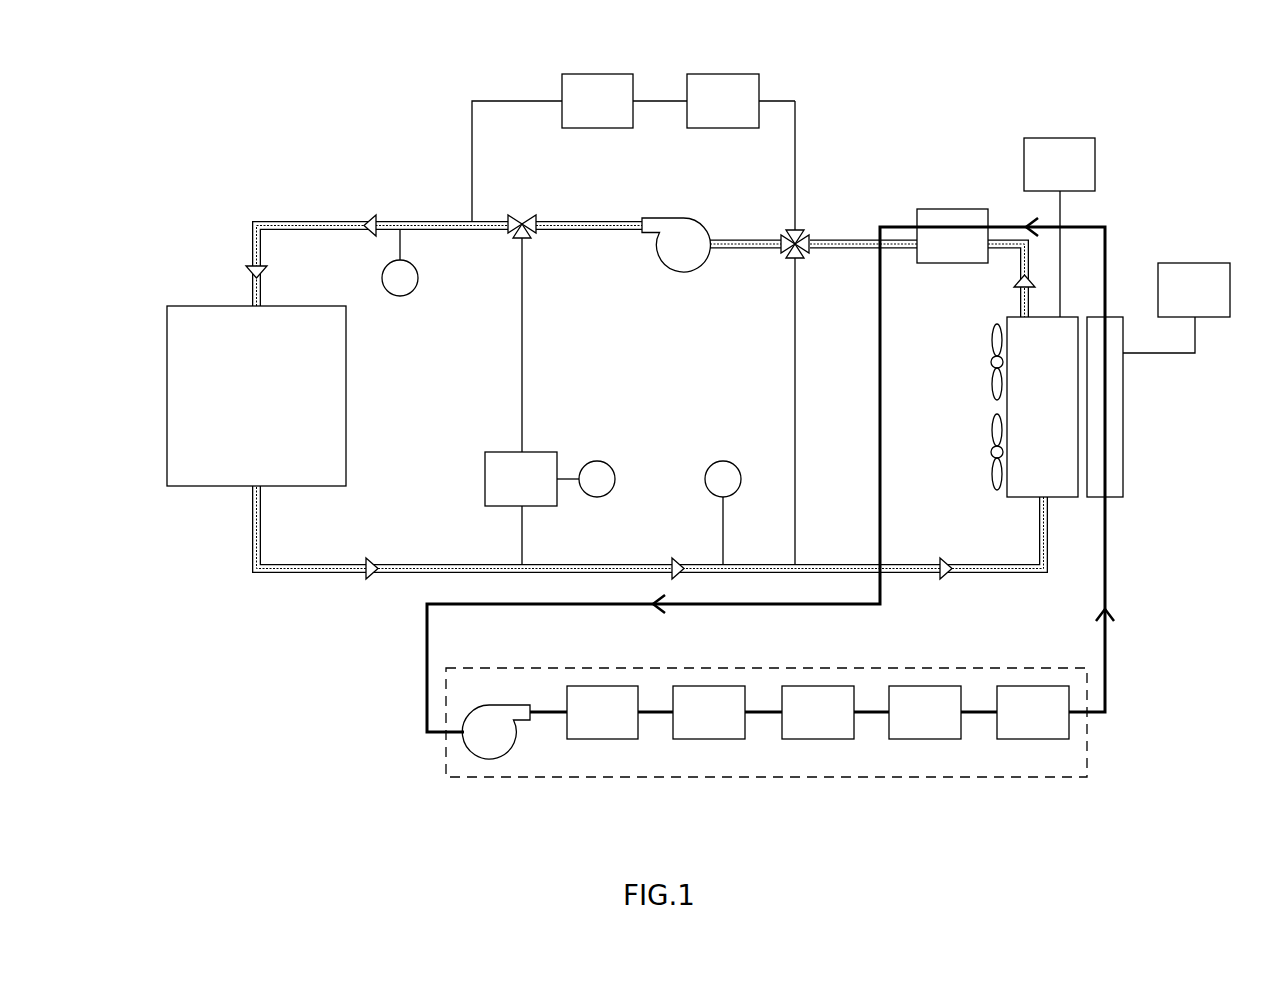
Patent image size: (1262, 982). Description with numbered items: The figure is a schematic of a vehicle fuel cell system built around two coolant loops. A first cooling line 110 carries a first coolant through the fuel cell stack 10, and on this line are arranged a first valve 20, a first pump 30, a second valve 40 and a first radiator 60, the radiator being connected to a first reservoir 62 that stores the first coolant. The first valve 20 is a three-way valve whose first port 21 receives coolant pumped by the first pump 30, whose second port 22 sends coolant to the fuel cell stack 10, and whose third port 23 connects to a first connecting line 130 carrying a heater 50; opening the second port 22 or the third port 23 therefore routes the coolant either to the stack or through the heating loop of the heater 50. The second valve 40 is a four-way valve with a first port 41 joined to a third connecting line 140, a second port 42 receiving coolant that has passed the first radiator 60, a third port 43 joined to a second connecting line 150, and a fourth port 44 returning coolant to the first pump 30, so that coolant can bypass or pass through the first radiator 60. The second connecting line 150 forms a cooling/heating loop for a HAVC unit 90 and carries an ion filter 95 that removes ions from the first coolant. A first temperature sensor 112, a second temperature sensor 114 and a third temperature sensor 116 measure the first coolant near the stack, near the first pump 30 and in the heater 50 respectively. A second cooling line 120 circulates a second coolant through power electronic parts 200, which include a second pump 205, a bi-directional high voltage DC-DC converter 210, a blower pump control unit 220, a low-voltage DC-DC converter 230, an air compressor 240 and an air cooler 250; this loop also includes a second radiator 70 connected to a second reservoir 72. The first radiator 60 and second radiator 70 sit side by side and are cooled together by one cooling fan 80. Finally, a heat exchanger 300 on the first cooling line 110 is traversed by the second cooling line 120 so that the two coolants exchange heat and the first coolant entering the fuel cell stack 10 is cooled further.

The fuel cell stack 10 is at (167, 397).
The first valve 20 is at (521, 222).
The first port 21 is at (538, 231).
The second port 22 is at (507, 231).
The third port 23 is at (515, 240).
The first pump 30 is at (687, 229).
The second valve 40 is at (796, 244).
The first port 41 is at (788, 262).
The second port 42 is at (810, 250).
The third port 43 is at (788, 232).
The fourth port 44 is at (780, 250).
The heater 50 is at (485, 479).
The first radiator 60 is at (1060, 497).
The first reservoir 62 is at (1060, 138).
The second radiator 70 is at (1123, 405).
The second reservoir 72 is at (1195, 263).
The cooling fan 80 is at (991, 448).
The HAVC unit 90 is at (597, 74).
The ion filter 95 is at (723, 74).
The first cooling line 110 is at (330, 221).
The first temperature sensor 112 is at (400, 298).
The second temperature sensor 114 is at (722, 461).
The third temperature sensor 116 is at (596, 461).
The second cooling line 120 is at (427, 668).
The first connecting line 130 is at (522, 537).
The third connecting line 140 is at (795, 476).
The second connecting line 150 is at (497, 101).
The power electronic parts 200 is at (1087, 757).
The second pump 205 is at (500, 705).
The bi-directional high voltage DC-DC converter 210 is at (602, 686).
The blower pump control unit 220 is at (709, 686).
The low-voltage DC-DC converter 230 is at (818, 686).
The air compressor 240 is at (925, 686).
The air cooler 250 is at (1033, 686).
The heat exchanger 300 is at (953, 209).